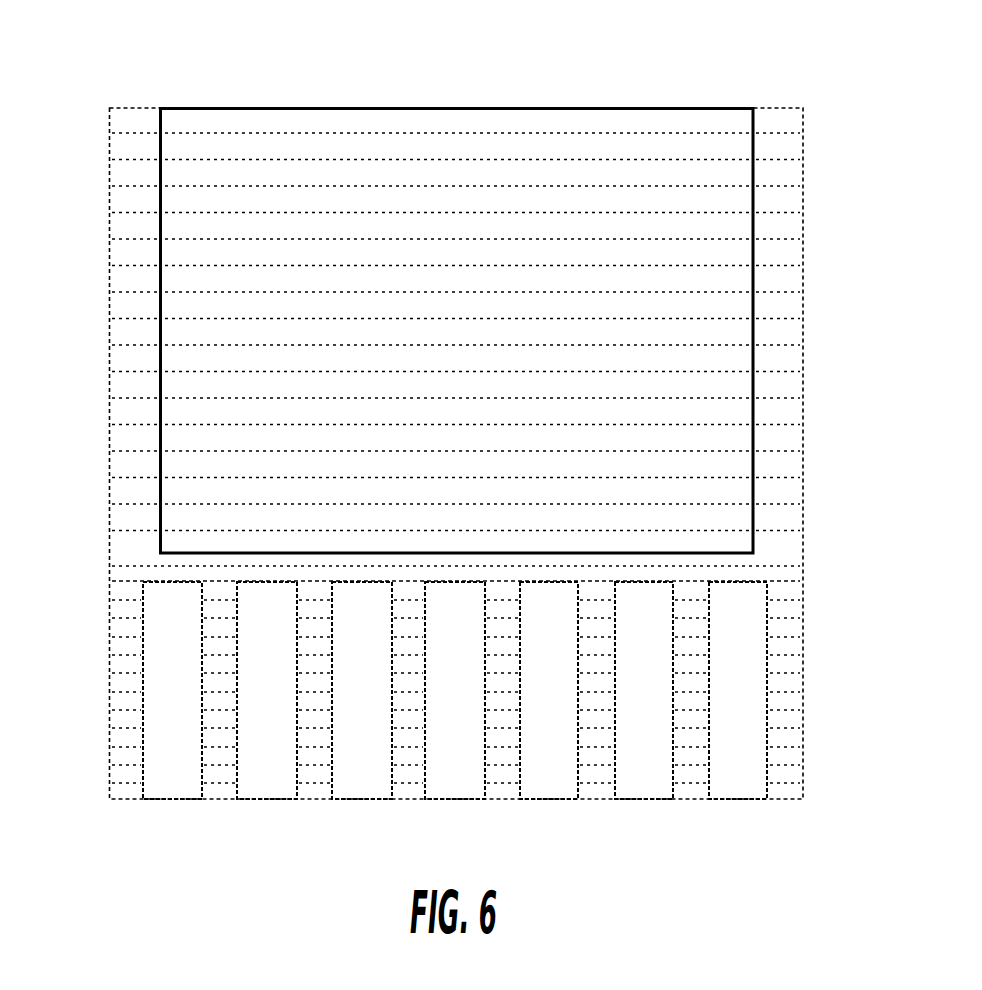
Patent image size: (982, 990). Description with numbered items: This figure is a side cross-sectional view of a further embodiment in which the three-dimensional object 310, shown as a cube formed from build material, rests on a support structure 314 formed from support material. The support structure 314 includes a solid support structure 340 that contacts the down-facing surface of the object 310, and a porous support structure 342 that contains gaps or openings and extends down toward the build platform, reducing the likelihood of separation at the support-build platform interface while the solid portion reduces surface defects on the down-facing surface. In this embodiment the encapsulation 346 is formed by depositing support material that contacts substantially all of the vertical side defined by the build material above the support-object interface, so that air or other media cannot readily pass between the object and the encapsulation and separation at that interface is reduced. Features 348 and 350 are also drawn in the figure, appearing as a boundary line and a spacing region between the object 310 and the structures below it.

The three-dimensional object 310 is at (568, 122).
The support structure 314 is at (123, 563).
The solid support structure 340 is at (175, 572).
The porous support structure 342 is at (234, 755).
The encapsulation 346 is at (785, 229).
The boundary line 348 is at (786, 577).
The spacing region 350 is at (770, 557).